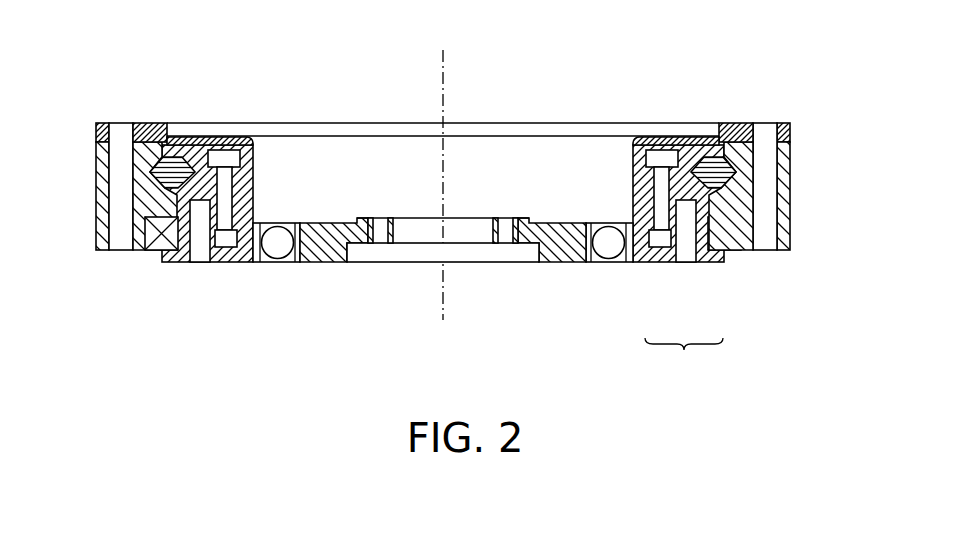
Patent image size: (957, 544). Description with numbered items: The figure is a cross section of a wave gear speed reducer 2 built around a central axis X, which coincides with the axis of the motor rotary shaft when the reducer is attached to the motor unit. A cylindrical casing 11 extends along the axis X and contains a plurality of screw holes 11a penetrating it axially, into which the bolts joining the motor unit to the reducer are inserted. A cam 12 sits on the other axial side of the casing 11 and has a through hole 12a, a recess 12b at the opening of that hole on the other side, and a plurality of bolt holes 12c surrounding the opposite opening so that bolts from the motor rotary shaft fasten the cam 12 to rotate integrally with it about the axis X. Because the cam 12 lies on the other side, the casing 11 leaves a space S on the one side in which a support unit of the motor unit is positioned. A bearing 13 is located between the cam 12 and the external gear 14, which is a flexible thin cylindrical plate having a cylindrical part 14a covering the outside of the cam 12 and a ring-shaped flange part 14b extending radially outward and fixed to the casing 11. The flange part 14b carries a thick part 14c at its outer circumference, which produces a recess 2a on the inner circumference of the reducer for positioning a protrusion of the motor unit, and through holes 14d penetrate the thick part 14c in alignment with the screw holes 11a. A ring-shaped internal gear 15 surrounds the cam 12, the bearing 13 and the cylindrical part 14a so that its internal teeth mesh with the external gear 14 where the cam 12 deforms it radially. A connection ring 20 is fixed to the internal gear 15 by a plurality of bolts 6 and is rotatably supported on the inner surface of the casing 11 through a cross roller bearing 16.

The wave gear speed reducer 2 is at (474, 190).
The recess 2a is at (710, 133).
The bolts 6 is at (660, 158).
The casing 11 is at (474, 216).
The screw holes 11a is at (766, 218).
The cam 12 is at (322, 263).
The through hole 12a is at (482, 232).
The recess 12b is at (528, 248).
The bolt holes 12c is at (507, 228).
The bearing 13 is at (608, 246).
The external gear 14 is at (684, 356).
The cylindrical part 14a is at (657, 236).
The flange part 14b is at (700, 236).
The thick part 14c is at (146, 125).
The through holes 14d is at (770, 130).
The internal gear 15 is at (218, 263).
The cross roller bearing 16 is at (170, 182).
The connection ring 20 is at (197, 152).
The space S is at (312, 160).
The axis X is at (446, 47).